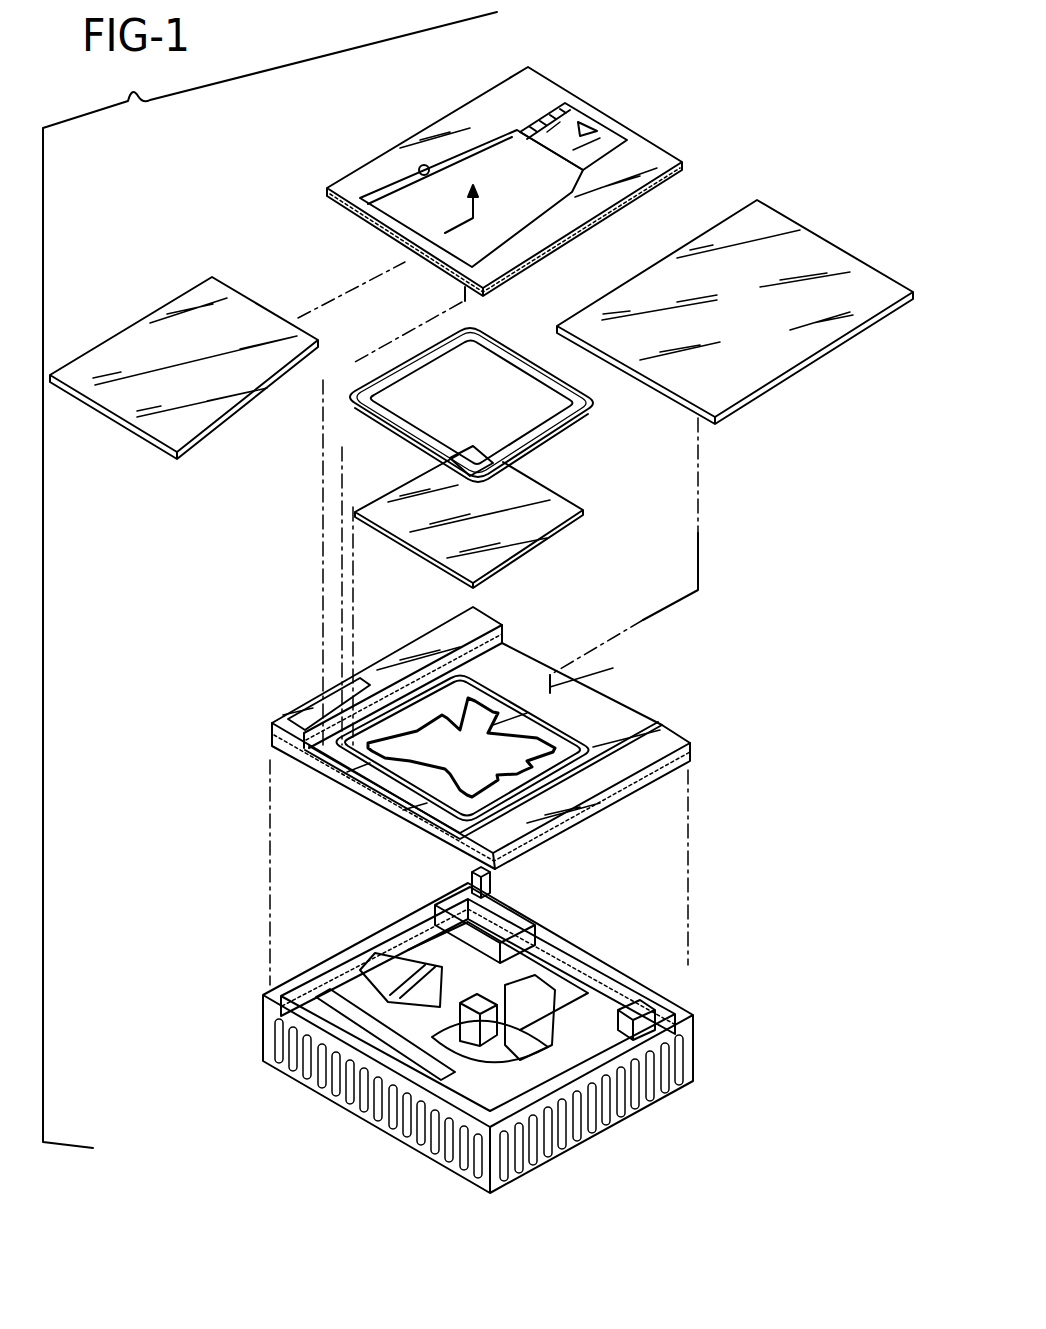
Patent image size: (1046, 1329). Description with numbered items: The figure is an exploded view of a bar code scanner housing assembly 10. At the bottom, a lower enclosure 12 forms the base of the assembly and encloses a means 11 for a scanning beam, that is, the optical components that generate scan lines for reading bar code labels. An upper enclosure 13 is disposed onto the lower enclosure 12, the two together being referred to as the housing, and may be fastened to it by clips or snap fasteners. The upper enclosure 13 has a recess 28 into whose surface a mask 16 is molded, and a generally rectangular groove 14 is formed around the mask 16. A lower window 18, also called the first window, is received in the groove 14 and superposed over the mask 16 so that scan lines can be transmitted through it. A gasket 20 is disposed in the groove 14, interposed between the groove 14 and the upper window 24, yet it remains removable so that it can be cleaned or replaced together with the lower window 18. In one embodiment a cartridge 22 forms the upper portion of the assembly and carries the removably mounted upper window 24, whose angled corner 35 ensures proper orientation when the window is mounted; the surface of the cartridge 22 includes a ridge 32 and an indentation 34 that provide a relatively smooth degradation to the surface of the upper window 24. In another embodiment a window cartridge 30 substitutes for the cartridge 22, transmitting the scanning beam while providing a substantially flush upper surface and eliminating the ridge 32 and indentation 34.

The bar code scanner housing assembly 10 is at (194, 685).
The means for a scanning beam 11 is at (528, 1013).
The lower enclosure 12 is at (585, 1117).
The upper enclosure 13 is at (680, 728).
The groove 14 is at (580, 748).
The mask 16 is at (477, 734).
The lower window 18 is at (550, 523).
The gasket 20 is at (580, 430).
The cartridge 22 is at (528, 86).
The upper window 24 is at (137, 330).
The recess 28 is at (392, 793).
The window cartridge 30 is at (747, 222).
The ridge 32 is at (424, 166).
The indentation 34 is at (567, 130).
The angled corner 35 is at (322, 357).